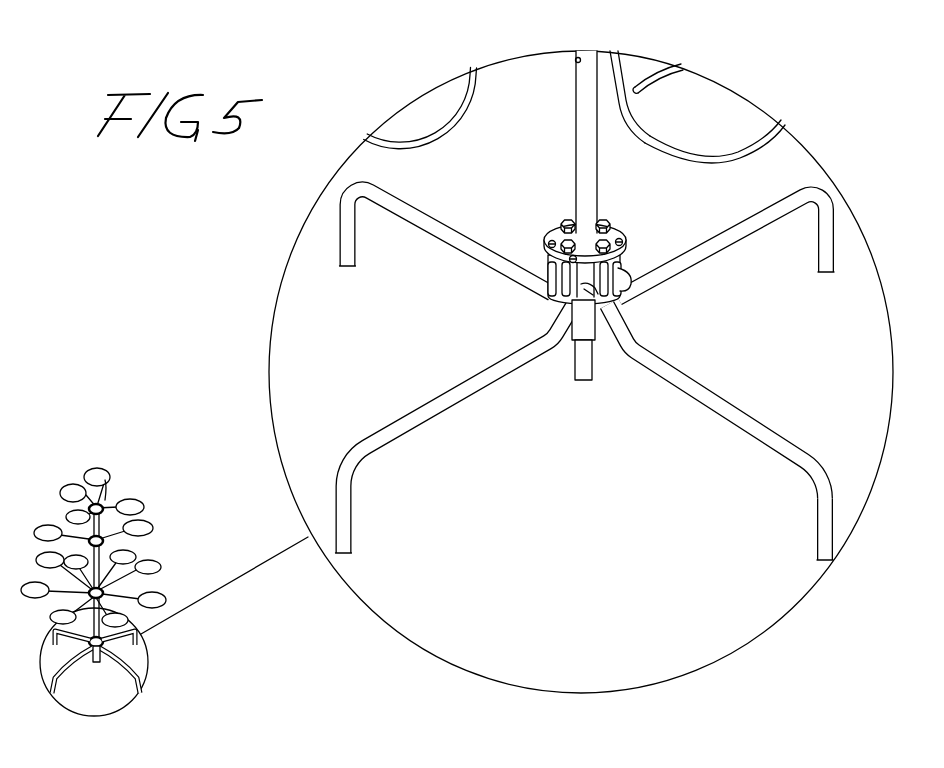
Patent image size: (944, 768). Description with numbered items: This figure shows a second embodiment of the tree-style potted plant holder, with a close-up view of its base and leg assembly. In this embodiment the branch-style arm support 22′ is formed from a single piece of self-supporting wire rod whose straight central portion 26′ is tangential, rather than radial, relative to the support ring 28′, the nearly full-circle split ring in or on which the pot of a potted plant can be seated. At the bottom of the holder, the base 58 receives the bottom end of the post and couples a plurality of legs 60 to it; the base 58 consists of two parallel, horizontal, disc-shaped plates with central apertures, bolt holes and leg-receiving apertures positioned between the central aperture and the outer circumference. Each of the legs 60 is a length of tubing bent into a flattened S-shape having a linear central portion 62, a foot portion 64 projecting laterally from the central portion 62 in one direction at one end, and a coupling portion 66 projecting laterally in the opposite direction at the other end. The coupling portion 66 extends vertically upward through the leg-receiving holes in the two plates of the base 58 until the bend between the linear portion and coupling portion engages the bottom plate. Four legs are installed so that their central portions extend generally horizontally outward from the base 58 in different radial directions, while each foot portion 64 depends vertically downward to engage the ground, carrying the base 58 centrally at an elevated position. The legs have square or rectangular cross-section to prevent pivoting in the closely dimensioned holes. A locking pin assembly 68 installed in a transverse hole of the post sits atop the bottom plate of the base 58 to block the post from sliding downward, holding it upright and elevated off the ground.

The arm support 22′ is at (627, 138).
The central portion 26′ is at (615, 80).
The support ring 28′ is at (757, 166).
The base 58 is at (589, 192).
The legs 60 is at (585, 381).
The linear central portion 62 is at (714, 394).
The foot portion 64 is at (818, 537).
The coupling portion 66 is at (632, 296).
The locking pin assembly 68 is at (557, 305).